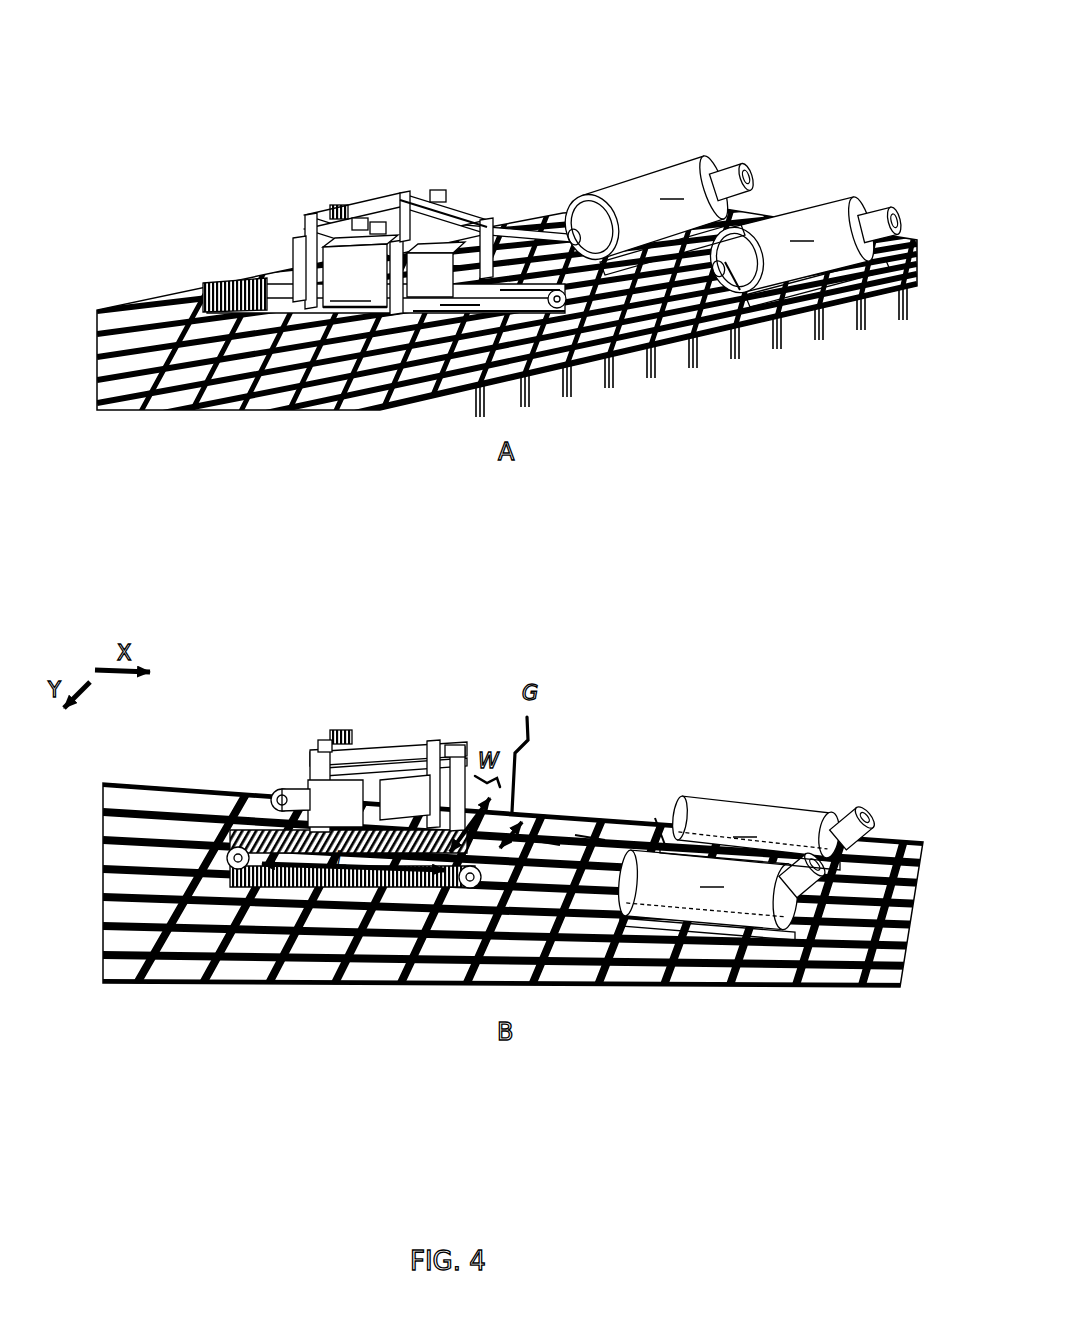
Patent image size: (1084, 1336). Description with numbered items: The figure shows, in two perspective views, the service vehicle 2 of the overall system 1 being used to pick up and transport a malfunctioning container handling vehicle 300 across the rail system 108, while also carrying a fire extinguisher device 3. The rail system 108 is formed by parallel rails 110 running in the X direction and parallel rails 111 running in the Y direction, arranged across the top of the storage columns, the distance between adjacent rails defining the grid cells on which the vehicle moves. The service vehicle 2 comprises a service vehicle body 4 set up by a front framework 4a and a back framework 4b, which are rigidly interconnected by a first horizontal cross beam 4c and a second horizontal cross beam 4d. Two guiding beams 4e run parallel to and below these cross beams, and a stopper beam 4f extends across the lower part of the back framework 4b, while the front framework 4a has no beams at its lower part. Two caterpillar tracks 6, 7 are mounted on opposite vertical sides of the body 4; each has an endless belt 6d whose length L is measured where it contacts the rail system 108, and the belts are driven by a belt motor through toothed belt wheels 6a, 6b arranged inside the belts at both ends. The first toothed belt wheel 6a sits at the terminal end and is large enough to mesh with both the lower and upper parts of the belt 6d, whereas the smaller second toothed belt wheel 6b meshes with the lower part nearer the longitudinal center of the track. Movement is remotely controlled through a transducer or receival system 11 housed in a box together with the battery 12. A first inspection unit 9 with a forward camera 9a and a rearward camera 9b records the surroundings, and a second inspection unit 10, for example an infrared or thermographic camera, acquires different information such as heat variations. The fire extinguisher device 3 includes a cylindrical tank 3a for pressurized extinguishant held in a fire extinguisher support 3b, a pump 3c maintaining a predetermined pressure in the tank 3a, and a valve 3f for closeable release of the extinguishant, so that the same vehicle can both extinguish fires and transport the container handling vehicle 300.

The production plant 1 is at (776, 146).
The service vehicle 2 is at (276, 159).
The fire extinguisher device 3 is at (610, 128).
The cylindrical tank 3a is at (718, 542).
The fire extinguisher support 3b is at (646, 228).
The pump 3c is at (715, 167).
The valve 3f is at (730, 263).
The service vehicle body 4 is at (404, 160).
The front framework 4a is at (310, 238).
The back framework 4b is at (470, 230).
The first horizontal cross beam 4c is at (462, 232).
The second horizontal cross beam 4d is at (378, 225).
The guiding beams 4e is at (460, 268).
The stopper beam 4f is at (340, 307).
The caterpillar track 6 is at (433, 360).
The first toothed belt wheel 6a is at (567, 303).
The second toothed belt wheel 6b is at (417, 340).
The endless belt 6d is at (457, 313).
The caterpillar track 7 is at (210, 266).
The first inspection unit 9 is at (362, 222).
The forward camera 9a is at (437, 193).
The rearward camera 9b is at (450, 747).
The second inspection unit 10 is at (338, 208).
The transducer or receival system 11 is at (327, 807).
The battery 12 is at (282, 800).
The rail system 108 is at (167, 317).
The rails in the X direction 110 is at (547, 847).
The rails in the Y direction 111 is at (590, 837).
The container handling vehicle 300 is at (372, 830).